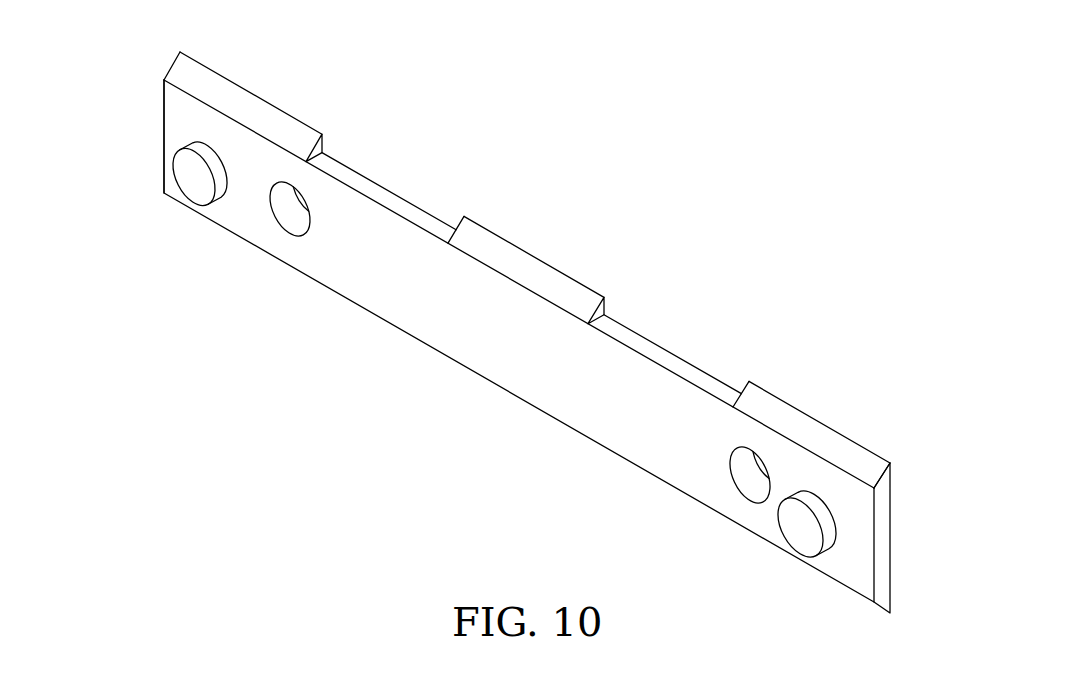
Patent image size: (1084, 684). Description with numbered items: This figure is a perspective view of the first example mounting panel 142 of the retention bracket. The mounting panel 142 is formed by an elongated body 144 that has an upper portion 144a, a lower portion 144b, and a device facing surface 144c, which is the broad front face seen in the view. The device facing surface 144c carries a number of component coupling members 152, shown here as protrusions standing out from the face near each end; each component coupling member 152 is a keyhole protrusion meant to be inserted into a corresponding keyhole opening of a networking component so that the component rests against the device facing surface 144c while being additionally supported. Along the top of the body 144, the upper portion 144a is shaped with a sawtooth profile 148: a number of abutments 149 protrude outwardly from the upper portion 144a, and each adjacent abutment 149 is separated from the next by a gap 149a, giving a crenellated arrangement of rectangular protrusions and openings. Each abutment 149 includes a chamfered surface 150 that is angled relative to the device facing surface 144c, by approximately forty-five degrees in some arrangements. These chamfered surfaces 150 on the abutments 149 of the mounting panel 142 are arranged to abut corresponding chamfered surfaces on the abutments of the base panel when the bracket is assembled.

The mounting panel 142 is at (446, 357).
The body 144 is at (408, 313).
The upper portion 144a is at (162, 60).
The lower portion 144b is at (162, 192).
The device facing surface 144c is at (533, 337).
The sawtooth opening or profile 148 is at (433, 237).
The abutment 149 is at (298, 112).
The gap 149a is at (420, 202).
The chamfered surface 150 is at (237, 105).
The component coupling member 152 is at (192, 187).